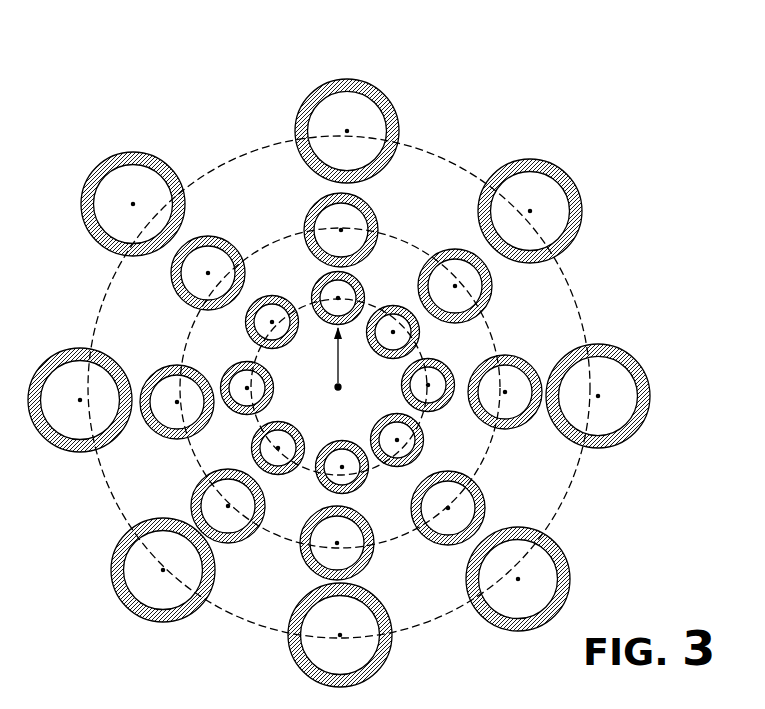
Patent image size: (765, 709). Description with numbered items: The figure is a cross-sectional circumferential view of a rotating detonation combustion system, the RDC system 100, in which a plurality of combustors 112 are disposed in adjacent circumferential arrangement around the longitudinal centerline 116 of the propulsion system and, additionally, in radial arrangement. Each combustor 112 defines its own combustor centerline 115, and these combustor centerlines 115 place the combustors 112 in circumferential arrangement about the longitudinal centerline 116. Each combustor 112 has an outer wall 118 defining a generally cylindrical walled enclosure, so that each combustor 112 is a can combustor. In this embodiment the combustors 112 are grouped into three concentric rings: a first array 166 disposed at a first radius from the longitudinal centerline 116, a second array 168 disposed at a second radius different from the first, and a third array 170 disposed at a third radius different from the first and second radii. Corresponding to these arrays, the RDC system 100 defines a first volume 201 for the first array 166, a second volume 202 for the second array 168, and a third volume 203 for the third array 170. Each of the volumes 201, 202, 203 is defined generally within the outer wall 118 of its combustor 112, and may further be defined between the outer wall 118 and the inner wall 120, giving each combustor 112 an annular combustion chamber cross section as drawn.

The RDC system 100 is at (592, 60).
The combustor 112 is at (443, 238).
The combustor centerline 115 is at (444, 512).
The longitudinal centerline 116 is at (336, 384).
The outer wall 118 is at (366, 68).
The inner wall 120 is at (128, 172).
The first array 166 is at (586, 170).
The second array 168 is at (505, 285).
The third array 170 is at (455, 360).
The first volume 201 is at (112, 557).
The second volume 202 is at (238, 534).
The third volume 203 is at (248, 438).